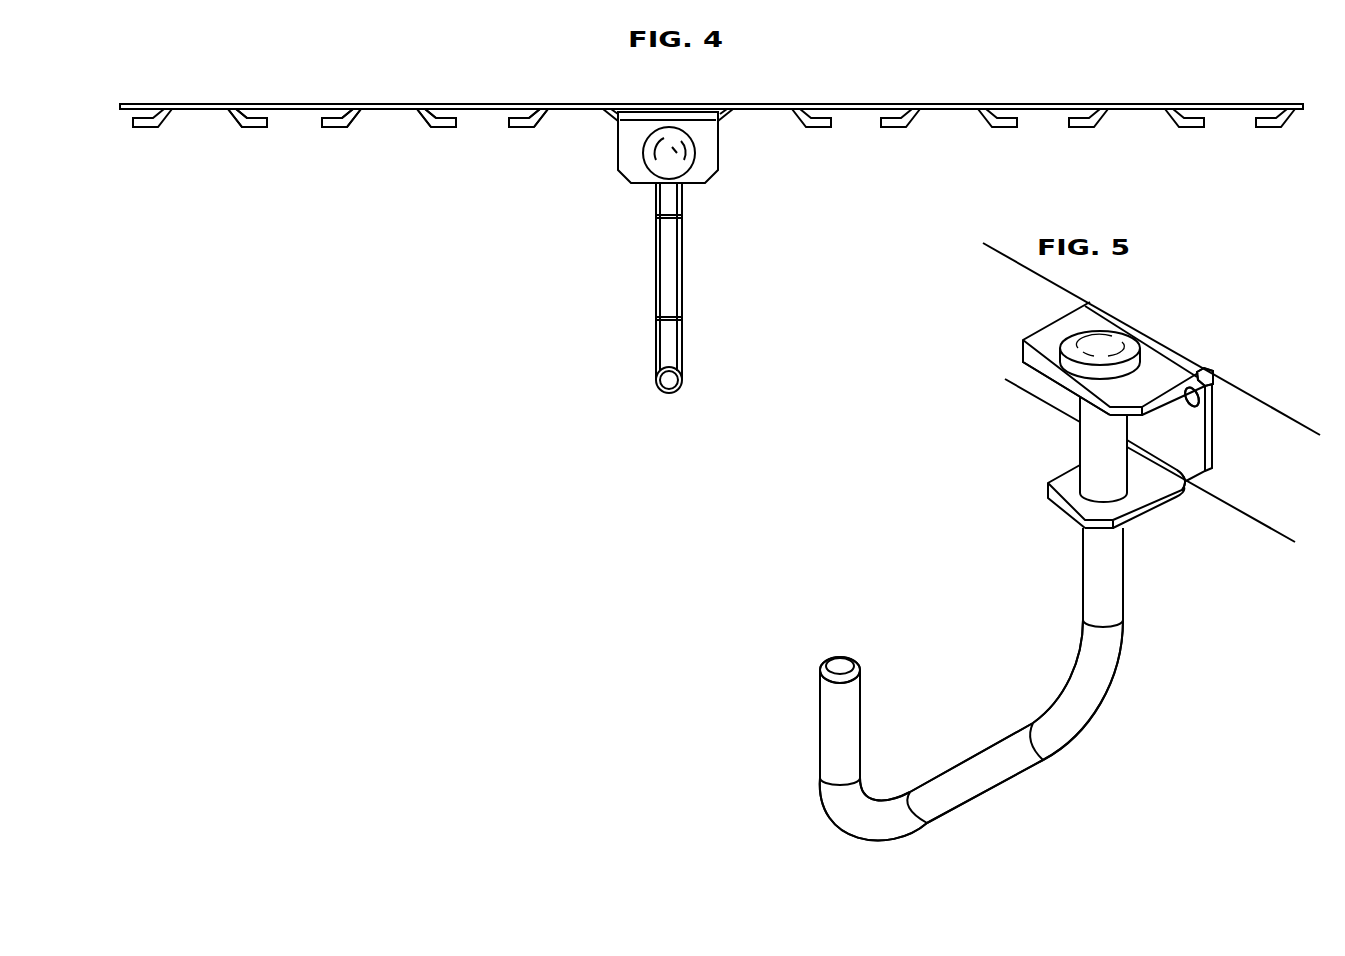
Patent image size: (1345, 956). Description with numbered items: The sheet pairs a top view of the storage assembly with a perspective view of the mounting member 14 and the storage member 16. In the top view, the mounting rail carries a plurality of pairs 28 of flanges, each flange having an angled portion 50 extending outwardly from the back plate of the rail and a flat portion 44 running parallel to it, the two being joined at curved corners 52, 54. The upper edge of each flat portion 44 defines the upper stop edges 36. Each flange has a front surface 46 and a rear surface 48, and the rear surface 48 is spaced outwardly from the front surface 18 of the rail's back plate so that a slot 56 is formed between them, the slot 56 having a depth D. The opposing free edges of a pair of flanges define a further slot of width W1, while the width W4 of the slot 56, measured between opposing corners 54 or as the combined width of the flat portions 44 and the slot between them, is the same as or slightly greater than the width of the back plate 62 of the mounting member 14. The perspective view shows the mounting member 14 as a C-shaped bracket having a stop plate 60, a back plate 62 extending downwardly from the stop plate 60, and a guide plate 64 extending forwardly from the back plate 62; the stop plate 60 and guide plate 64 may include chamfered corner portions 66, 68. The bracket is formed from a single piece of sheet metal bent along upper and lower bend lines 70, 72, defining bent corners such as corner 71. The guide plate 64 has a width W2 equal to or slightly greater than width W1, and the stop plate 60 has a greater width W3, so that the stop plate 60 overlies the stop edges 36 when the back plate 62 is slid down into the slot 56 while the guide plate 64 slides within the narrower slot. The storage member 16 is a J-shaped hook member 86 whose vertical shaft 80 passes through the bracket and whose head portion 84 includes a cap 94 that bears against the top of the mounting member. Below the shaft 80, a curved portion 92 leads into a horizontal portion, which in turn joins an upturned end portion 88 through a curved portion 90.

In FIG. 5, the mounting member 14 is at (1163, 531).
In FIG. 4, the storage member 16 is at (683, 282).
In FIG. 5, the storage member 16 is at (831, 834).
In FIG. 4, the front surface 18 is at (488, 113).
In FIG. 4, the pairs of flanges 28 is at (228, 158).
In FIG. 4, the upper stop edges 36 is at (436, 115).
In FIG. 4, the flat portion 44 is at (527, 133).
In FIG. 4, the front surface 46 is at (447, 133).
In FIG. 4, the rear surface 48 is at (452, 120).
In FIG. 4, the angled portion 50 is at (432, 111).
In FIG. 4, the curved corner 52 is at (548, 113).
In FIG. 4, the curved corner 54 is at (535, 124).
In FIG. 4, the slot 56 is at (515, 117).
In FIG. 4, the stop plate 60 is at (705, 173).
In FIG. 5, the stop plate 60 is at (1162, 367).
In FIG. 5, the back plate 62 is at (1198, 440).
In FIG. 5, the guide plate 64 is at (1128, 503).
In FIG. 5, the chamfered corner portion 66 is at (1020, 351).
In FIG. 5, the chamfered corner portion 68 is at (1047, 493).
In FIG. 5, the upper bend/fold line 70 is at (1272, 406).
In FIG. 4, the curved or bent corner 71 is at (675, 118).
In FIG. 5, the curved or bent corner 71 is at (1205, 372).
In FIG. 5, the lower bend/fold line 72 is at (1243, 512).
In FIG. 5, the shaft 80 is at (1117, 600).
In FIG. 4, the head portion 84 is at (673, 150).
In FIG. 5, the head portion 84 is at (1090, 358).
In FIG. 5, the hook member 86 is at (1050, 775).
In FIG. 5, the end portion 88 is at (813, 707).
In FIG. 5, the curved portion 90 is at (885, 832).
In FIG. 5, the curved portion 92 is at (1093, 717).
In FIG. 5, the cap 94 is at (1066, 355).
In FIG. 4, the width of the slot between free edges W1 is at (323, 122).
In FIG. 5, the width of the guide plate W2 is at (1113, 521).
In FIG. 5, the width of the stop plate W3 is at (1090, 302).
In FIG. 4, the width of the slot W4 is at (432, 130).
In FIG. 4, the depth of the slot D is at (465, 88).